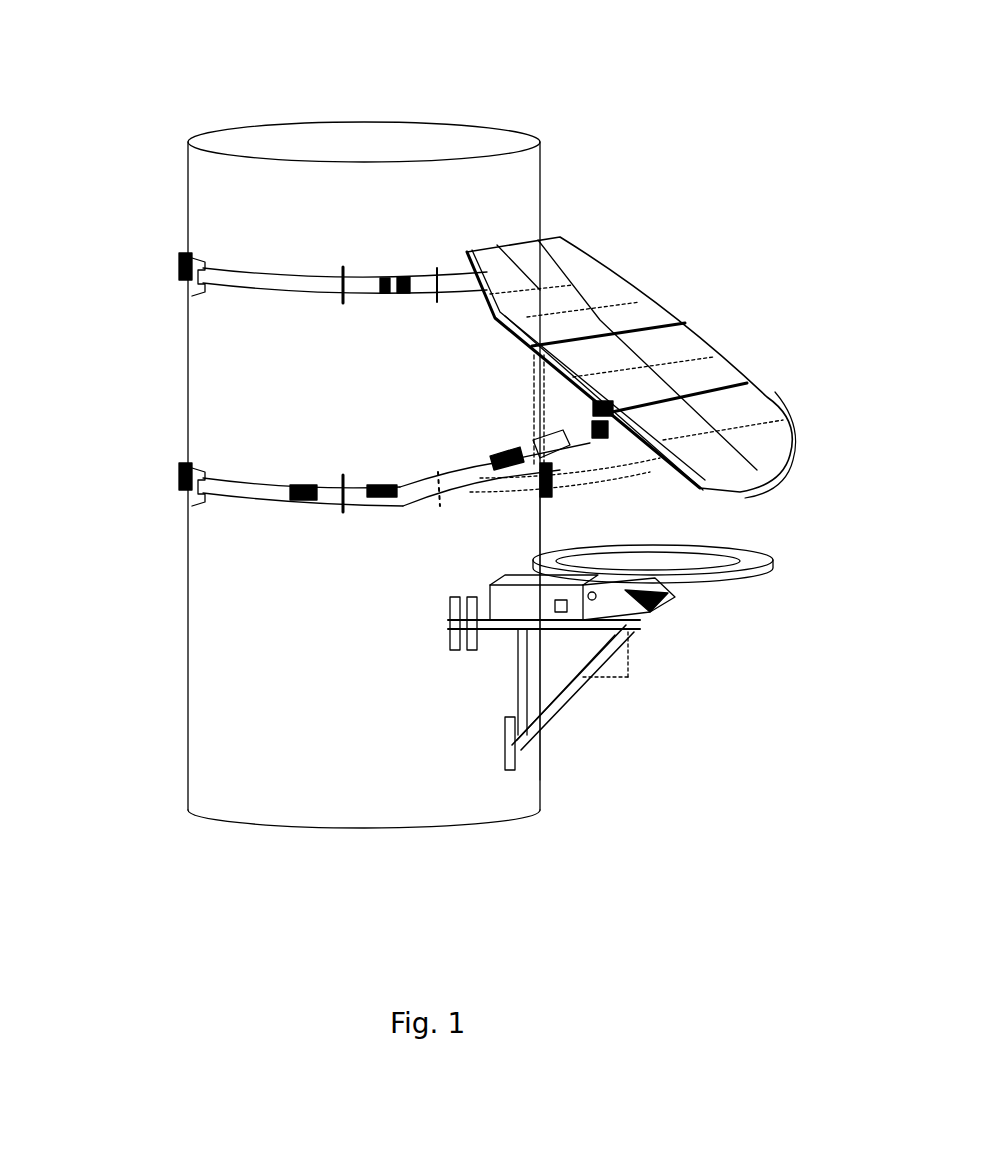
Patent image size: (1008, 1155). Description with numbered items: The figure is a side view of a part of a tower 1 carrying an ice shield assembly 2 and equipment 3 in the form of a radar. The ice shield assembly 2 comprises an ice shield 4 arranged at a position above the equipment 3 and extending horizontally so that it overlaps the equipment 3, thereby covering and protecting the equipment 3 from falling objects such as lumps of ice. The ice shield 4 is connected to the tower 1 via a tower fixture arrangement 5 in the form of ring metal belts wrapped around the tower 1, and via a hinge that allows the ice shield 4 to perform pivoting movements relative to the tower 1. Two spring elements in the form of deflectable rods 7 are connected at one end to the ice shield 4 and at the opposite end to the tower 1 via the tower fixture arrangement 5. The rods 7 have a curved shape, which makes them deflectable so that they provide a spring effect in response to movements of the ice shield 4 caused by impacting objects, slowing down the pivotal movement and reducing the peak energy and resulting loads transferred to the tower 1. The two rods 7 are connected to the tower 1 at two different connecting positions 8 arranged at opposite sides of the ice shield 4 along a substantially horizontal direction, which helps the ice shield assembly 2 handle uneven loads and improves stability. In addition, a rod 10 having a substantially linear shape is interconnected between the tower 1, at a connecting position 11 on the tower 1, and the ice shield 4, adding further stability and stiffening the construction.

The tower 1 is at (487, 193).
The ice shield assembly 2 is at (658, 472).
The equipment 3 is at (657, 612).
The ice shield 4 is at (700, 373).
The tower fixture arrangement 5 is at (250, 490).
The deflectable rods 7 is at (580, 473).
The connecting positions 8 is at (297, 500).
The rod 10 is at (500, 466).
The connecting position 11 is at (380, 487).